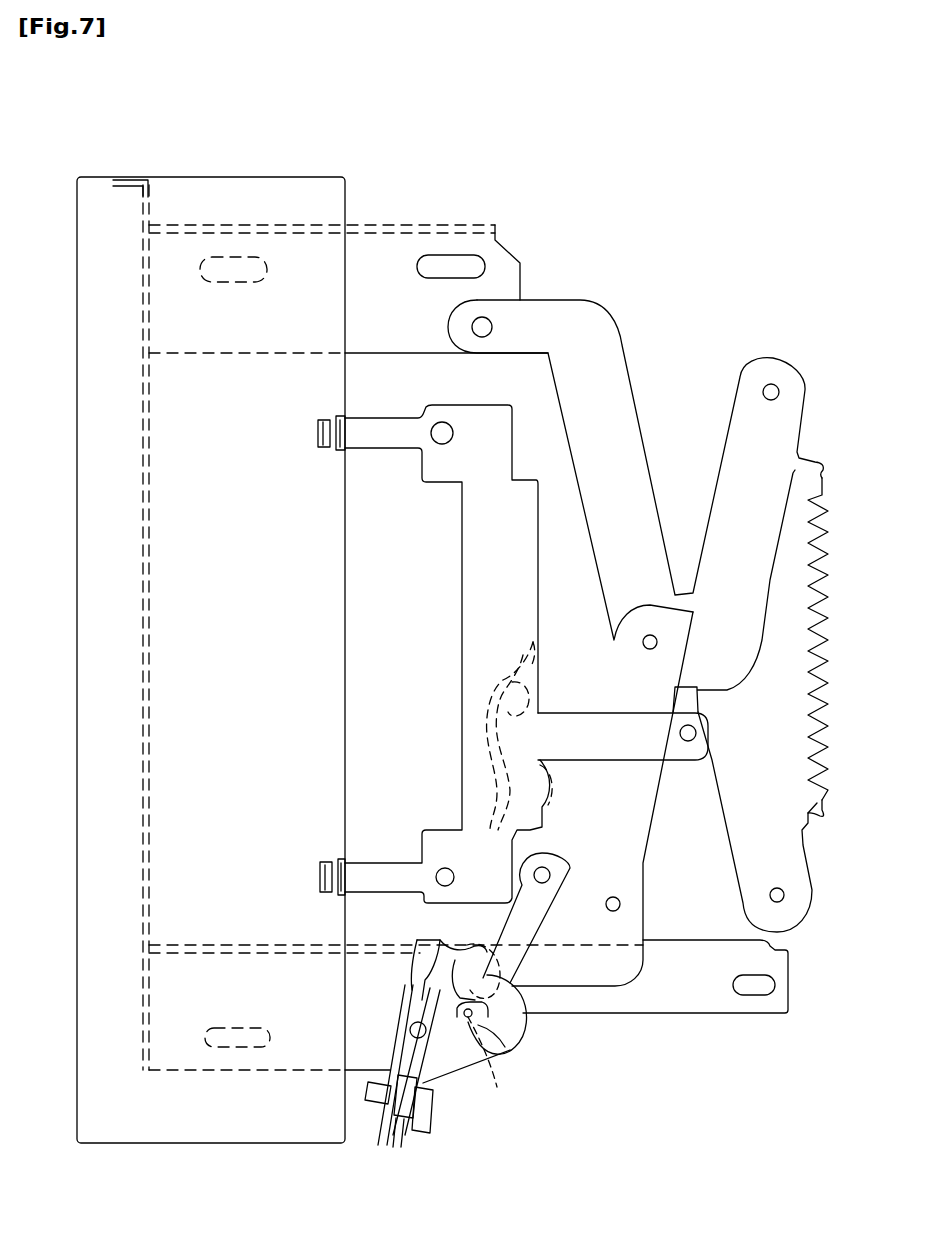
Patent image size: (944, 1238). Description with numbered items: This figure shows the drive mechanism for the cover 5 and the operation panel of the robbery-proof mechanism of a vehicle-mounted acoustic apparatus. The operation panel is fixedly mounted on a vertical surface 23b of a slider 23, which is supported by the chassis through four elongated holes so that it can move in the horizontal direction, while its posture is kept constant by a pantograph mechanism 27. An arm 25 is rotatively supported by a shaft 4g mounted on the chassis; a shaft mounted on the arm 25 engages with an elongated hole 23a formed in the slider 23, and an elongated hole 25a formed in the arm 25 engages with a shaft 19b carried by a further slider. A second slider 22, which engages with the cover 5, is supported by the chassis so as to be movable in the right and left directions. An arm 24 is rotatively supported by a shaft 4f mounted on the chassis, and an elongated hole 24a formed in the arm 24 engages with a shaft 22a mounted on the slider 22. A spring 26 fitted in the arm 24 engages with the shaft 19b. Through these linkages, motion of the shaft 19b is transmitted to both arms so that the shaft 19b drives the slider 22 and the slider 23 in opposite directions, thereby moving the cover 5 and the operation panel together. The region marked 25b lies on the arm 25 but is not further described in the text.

The cover 5 is at (320, 177).
The pantograph mechanism 27 is at (663, 412).
The slider 22 is at (465, 568).
The shaft 22a is at (497, 743).
The elongated hole 24a is at (563, 644).
The shaft 4g is at (560, 862).
The slider 23 is at (650, 1015).
The elongated hole 23a is at (506, 1067).
The vertical surface 23b is at (145, 852).
The arm 24 is at (433, 945).
The shaft 4f is at (410, 1027).
The arm 25 is at (527, 1027).
The elongated hole 25a is at (377, 1130).
The plate portion 25b is at (505, 1047).
The shaft 19b is at (431, 1118).
The spring 26 is at (393, 1147).